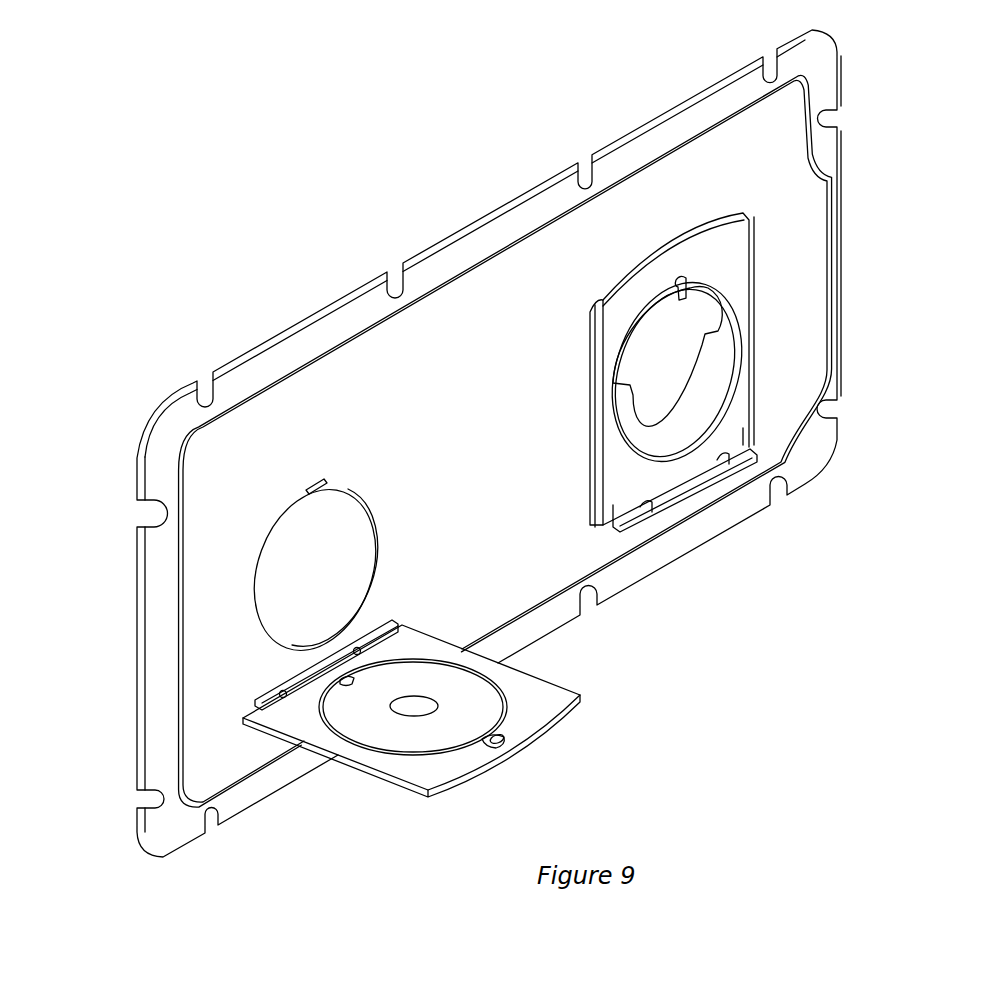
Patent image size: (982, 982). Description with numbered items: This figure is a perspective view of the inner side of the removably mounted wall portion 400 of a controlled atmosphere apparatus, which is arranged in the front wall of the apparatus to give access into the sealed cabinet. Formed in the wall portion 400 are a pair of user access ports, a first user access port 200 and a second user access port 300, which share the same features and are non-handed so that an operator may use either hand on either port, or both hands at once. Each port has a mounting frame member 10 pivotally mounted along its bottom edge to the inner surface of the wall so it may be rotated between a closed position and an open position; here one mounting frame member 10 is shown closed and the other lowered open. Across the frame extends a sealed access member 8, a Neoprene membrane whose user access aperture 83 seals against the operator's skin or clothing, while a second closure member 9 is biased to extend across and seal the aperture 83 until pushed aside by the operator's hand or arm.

The first user access port 200 is at (233, 618).
The removably mounted wall portion 400 is at (365, 390).
The second user access port 300 is at (722, 431).
The second closure member 9 is at (692, 317).
The mounting frame member 10 is at (736, 404).
The sealed access member 8 is at (470, 690).
The user access aperture 83 is at (408, 708).